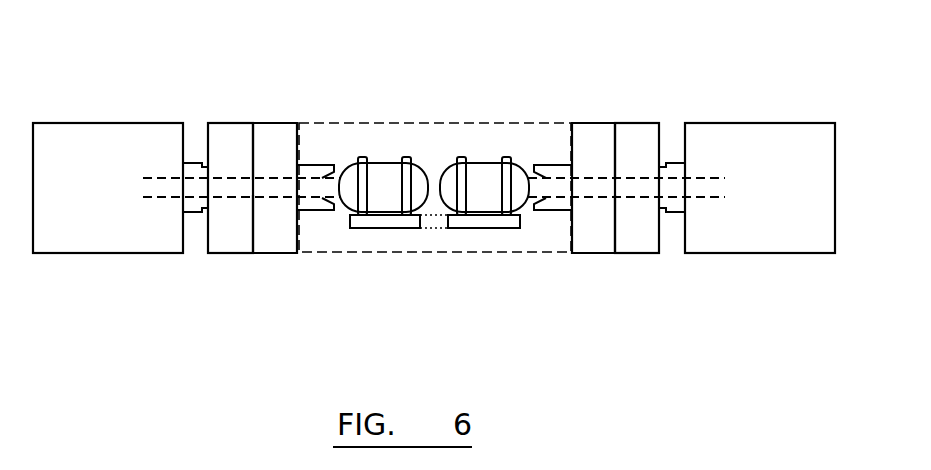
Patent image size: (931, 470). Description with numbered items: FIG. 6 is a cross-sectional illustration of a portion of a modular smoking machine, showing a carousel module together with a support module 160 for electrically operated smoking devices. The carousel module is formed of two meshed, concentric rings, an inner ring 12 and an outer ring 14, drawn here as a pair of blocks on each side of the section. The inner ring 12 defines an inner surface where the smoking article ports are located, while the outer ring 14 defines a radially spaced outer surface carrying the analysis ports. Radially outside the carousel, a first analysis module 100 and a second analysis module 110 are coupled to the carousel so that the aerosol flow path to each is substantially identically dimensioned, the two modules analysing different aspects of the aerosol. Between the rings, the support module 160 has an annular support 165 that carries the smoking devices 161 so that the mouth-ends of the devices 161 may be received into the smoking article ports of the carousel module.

The second analysis module 110 is at (108, 128).
The outer ring 14 is at (233, 128).
The inner ring 12 is at (277, 128).
The first analysis module 100 is at (757, 128).
The support module 160 is at (434, 190).
The smoking devices 161 is at (385, 173).
The annular support 165 is at (373, 222).